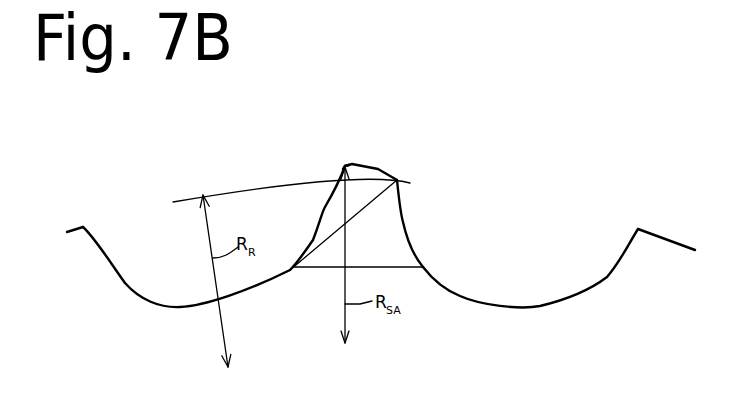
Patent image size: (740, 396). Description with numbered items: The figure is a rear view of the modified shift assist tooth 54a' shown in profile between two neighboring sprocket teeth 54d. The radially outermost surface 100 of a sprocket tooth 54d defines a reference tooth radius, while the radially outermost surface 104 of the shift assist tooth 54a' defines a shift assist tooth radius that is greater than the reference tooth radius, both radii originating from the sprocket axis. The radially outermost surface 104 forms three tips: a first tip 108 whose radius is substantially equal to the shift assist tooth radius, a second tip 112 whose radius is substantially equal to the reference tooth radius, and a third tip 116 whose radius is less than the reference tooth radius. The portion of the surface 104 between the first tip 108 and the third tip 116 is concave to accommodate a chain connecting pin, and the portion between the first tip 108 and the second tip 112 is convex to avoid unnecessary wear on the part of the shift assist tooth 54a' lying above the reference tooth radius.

The radially outermost surface of sprocket tooth 100 is at (648, 226).
The sprocket tooth 54d is at (76, 232).
The shift assist tooth 54a' is at (365, 180).
The third tip 116 is at (322, 207).
The first tip 108 is at (343, 166).
The radially outermost surface of shift assist tooth 104 is at (378, 169).
The second tip 112 is at (397, 180).